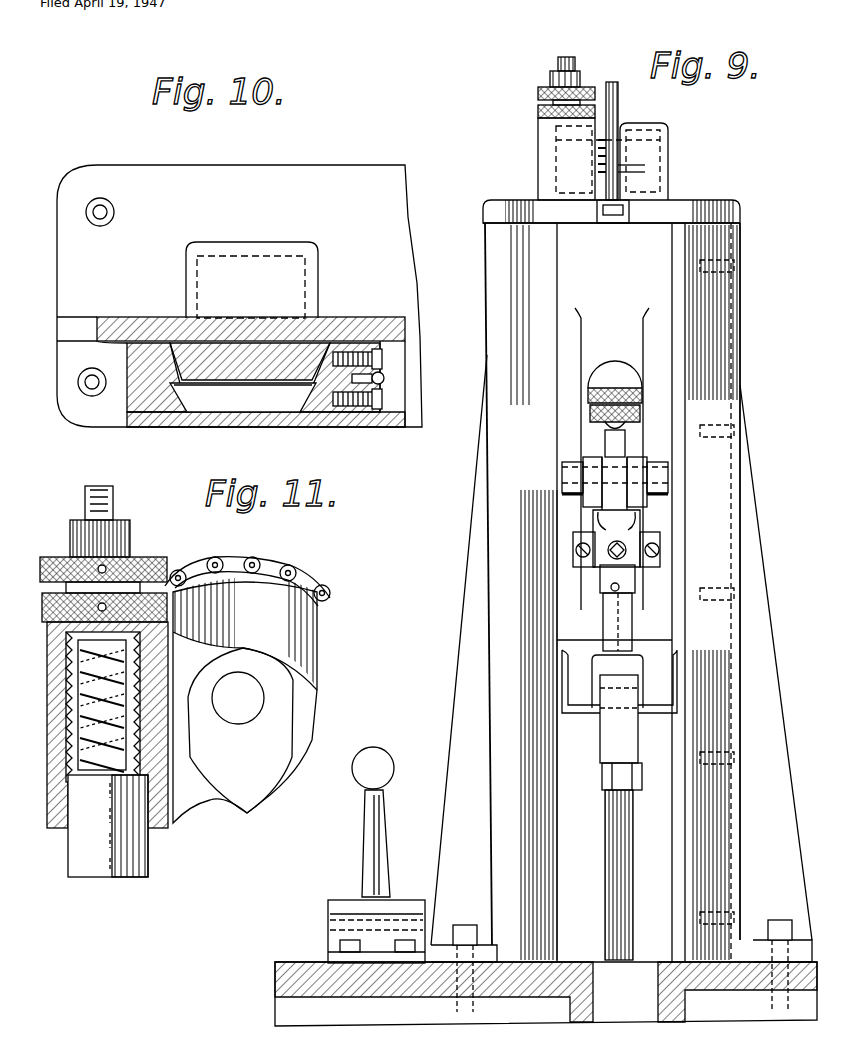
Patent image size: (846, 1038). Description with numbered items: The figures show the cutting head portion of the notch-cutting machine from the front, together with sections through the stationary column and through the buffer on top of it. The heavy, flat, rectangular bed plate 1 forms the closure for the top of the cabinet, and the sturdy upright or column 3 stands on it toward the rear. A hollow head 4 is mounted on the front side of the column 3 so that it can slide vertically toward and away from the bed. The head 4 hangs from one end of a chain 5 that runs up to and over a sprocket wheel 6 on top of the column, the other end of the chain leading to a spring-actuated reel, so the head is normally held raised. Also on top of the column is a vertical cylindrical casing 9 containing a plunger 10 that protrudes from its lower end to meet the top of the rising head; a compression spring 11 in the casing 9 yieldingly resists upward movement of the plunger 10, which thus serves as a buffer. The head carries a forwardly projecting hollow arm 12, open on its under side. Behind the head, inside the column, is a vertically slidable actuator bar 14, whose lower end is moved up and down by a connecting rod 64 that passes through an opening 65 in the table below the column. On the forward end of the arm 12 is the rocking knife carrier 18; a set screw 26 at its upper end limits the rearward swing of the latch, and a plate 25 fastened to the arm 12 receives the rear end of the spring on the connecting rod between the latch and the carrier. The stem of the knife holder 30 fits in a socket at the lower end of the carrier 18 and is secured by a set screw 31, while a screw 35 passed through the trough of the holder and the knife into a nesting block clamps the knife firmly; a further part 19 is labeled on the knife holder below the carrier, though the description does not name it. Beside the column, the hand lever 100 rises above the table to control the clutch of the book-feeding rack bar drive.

In FIG. 9, the bed plate 1 is at (578, 895).
In FIG. 10, the upright or column 3 is at (364, 317).
In FIG. 9, the upright or column 3 is at (752, 546).
In FIG. 10, the hollow head 4 is at (226, 418).
In FIG. 9, the hollow head 4 is at (614, 452).
In FIG. 11, the chain 5 is at (296, 566).
In FIG. 9, the chain 5 is at (618, 104).
In FIG. 11, the sprocket wheel 6 is at (308, 640).
In FIG. 11, the cylindrical casing 9 is at (62, 777).
In FIG. 9, the cylindrical casing 9 is at (538, 148).
In FIG. 11, the plunger 10 is at (72, 840).
In FIG. 9, the plunger 10 is at (565, 213).
In FIG. 11, the compression spring 11 is at (66, 676).
In FIG. 9, the hollow arm 12 is at (596, 437).
In FIG. 10, the actuator bar 14 is at (243, 395).
In FIG. 9, the actuator bar 14 is at (585, 672).
In FIG. 9, the knife carrier 18 is at (605, 516).
In FIG. 9, the rod 19 is at (630, 618).
In FIG. 9, the plate 25 is at (655, 548).
In FIG. 9, the set screw 26 is at (612, 372).
In FIG. 9, the knife holder 30 is at (612, 560).
In FIG. 9, the set screw 31 is at (596, 562).
In FIG. 9, the screw 35 is at (610, 591).
In FIG. 9, the connecting rod 64 is at (640, 831).
In FIG. 9, the opening 65 is at (609, 986).
In FIG. 9, the hand lever 100 is at (372, 848).